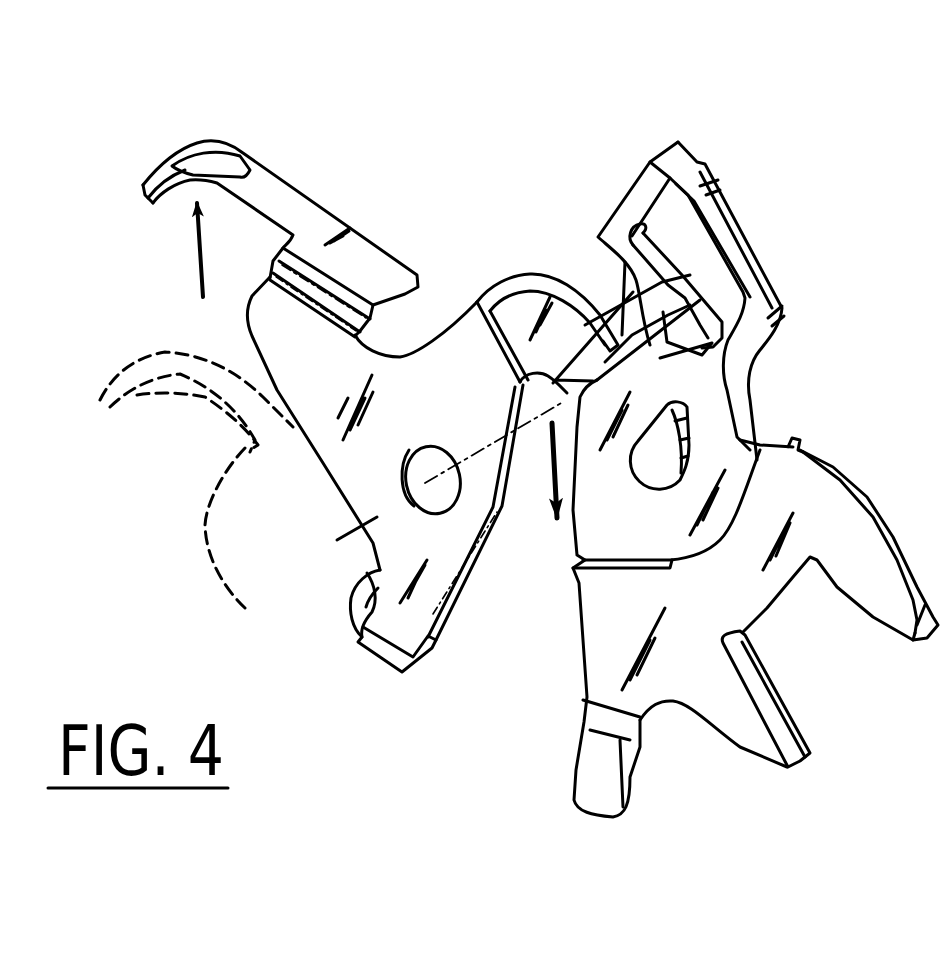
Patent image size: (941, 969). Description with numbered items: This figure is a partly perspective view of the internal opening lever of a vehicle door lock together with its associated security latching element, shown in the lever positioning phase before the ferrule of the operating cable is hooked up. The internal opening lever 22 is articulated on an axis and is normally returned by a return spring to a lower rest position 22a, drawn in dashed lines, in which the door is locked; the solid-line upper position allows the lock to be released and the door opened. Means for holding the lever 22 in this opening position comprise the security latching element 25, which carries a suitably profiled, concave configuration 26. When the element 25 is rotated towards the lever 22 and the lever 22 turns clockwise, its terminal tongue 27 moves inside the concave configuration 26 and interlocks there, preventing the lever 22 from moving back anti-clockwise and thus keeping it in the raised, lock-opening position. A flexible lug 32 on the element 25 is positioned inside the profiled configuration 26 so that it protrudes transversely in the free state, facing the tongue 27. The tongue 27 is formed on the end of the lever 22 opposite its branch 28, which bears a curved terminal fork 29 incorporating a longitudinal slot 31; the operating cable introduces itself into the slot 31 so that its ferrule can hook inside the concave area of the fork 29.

The internal opening lever 22 is at (333, 512).
The lower rest position 22a is at (188, 428).
The security latching element 25 is at (670, 720).
The profiled configuration 26 is at (703, 293).
The tongue 27 is at (636, 308).
The branch 28 is at (317, 193).
The curved terminal fork 29 is at (150, 188).
The slot 31 is at (242, 163).
The flexible lug 32 is at (675, 327).